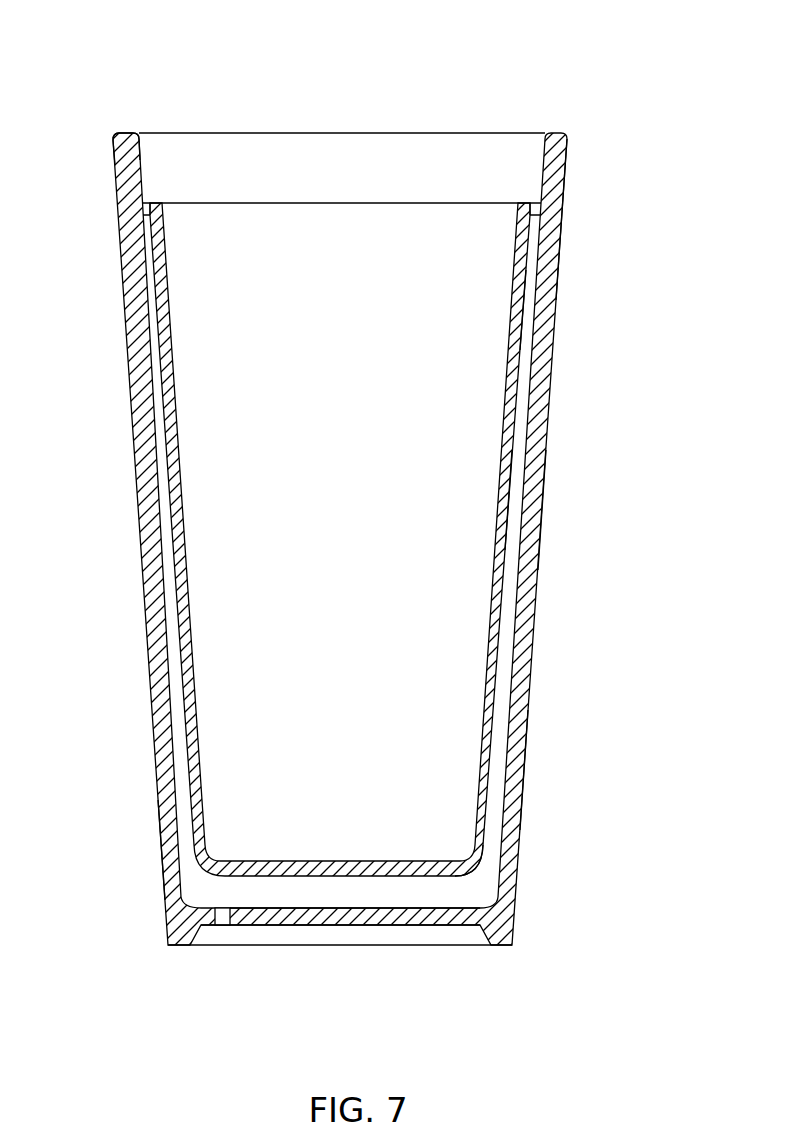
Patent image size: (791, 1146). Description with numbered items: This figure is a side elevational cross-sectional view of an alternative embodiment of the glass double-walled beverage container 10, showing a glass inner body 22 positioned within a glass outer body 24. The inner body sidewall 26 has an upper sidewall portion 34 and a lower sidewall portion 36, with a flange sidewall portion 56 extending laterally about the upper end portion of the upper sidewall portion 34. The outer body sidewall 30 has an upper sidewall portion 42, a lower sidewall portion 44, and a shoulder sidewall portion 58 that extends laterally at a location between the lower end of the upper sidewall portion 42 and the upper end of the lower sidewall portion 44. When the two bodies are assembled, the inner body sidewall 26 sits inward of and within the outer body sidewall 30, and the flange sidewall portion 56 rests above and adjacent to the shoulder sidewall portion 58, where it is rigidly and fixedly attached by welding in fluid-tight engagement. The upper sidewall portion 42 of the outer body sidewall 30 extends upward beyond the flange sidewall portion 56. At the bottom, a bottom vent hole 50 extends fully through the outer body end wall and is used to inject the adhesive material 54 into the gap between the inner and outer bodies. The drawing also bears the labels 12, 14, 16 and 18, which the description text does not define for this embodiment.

The glass double-walled beverage container 10 is at (660, 44).
The outer container wall 12 is at (566, 290).
The lid 14 is at (567, 172).
The bottom of outer container 16 is at (513, 912).
The outer sidewall 18 is at (539, 537).
The glass inner body 22 is at (508, 500).
The glass outer body 24 is at (522, 781).
The inner body sidewall 26 is at (180, 658).
The outer body sidewall 30 is at (165, 790).
The upper sidewall portion 34 is at (525, 328).
The lower sidewall portion 36 is at (488, 838).
The upper sidewall portion 42 is at (128, 163).
The lower sidewall portion 44 is at (173, 862).
The bottom vent hole 50 is at (222, 920).
The adhesive material 54 is at (400, 890).
The flange sidewall portion 56 is at (141, 210).
The shoulder sidewall portion 58 is at (150, 222).